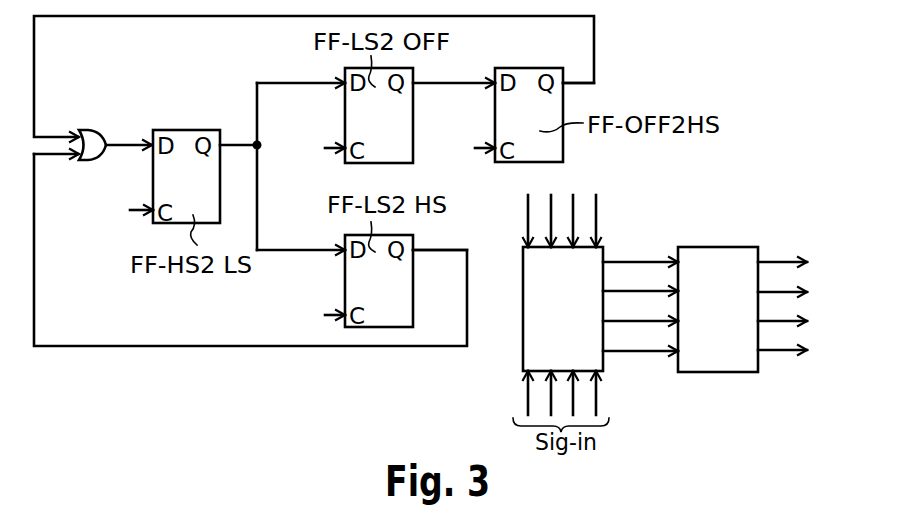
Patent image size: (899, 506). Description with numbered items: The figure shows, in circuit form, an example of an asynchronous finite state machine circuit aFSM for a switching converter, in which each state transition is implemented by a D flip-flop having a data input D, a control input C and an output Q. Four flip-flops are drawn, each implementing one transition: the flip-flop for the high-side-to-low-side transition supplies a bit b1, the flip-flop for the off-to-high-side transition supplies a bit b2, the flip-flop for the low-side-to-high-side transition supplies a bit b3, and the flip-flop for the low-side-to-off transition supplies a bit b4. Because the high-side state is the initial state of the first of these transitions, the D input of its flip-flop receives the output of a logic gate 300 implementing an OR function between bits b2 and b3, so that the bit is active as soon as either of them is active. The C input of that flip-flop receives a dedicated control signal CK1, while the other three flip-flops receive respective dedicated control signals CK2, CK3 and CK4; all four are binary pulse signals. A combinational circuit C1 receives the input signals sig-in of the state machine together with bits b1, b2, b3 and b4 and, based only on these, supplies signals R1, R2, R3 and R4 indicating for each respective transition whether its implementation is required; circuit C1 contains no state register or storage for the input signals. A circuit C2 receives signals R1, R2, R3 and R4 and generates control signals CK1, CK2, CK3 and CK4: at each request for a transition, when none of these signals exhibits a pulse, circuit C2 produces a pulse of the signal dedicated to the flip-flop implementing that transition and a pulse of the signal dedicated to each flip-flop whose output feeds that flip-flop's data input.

The logic gate 300 is at (93, 140).
The combinational circuit C1 is at (563, 309).
The circuit C2 is at (718, 309).
The signal R1 is at (640, 252).
The signal R2 is at (640, 281).
The signal R3 is at (640, 311).
The signal R4 is at (640, 341).
The control signal CK1 is at (468, 236).
The control signal CK2 is at (639, 219).
The control signal CK3 is at (564, 317).
The control signal CK4 is at (563, 248).
The bit b1 is at (396, 155).
The bit b2 is at (580, 158).
The bit b3 is at (498, 211).
The bit b4 is at (509, 151).
The circuit aFSM is at (762, 105).